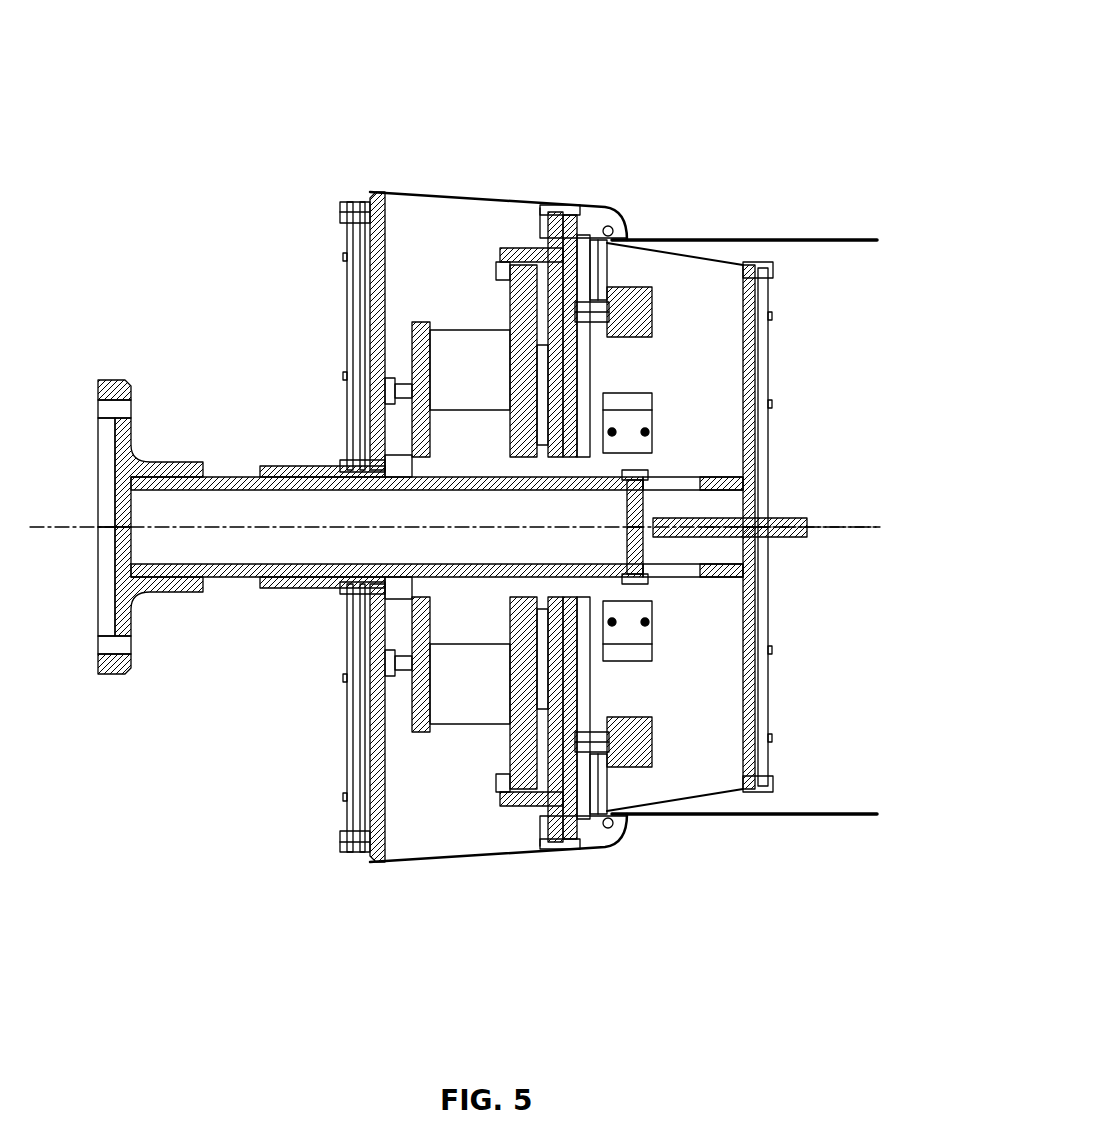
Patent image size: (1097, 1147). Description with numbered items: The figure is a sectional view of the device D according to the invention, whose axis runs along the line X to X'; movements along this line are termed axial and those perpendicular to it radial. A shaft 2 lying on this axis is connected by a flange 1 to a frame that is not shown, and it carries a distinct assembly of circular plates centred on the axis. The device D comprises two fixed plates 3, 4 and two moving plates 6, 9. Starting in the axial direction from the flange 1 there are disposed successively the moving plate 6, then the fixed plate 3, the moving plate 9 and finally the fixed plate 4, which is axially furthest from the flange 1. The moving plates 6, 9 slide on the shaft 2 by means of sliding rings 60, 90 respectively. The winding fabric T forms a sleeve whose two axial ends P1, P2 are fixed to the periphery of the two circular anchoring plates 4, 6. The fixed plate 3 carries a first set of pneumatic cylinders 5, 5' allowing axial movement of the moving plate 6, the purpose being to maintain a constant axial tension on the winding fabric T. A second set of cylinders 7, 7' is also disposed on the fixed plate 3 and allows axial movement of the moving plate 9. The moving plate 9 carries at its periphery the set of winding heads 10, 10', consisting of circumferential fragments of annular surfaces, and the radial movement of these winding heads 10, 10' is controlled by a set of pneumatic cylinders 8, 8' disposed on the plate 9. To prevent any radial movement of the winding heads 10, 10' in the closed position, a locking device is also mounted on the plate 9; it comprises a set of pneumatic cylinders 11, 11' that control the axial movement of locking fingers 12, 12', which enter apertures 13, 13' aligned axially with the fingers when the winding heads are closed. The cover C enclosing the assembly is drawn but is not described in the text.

The device D is at (310, 58).
The flange 1 is at (100, 668).
The shaft 2 is at (229, 581).
The fixed plate 3 is at (415, 725).
The fixed plate 4 is at (770, 735).
The pneumatic cylinder 5 is at (338, 663).
The pneumatic cylinder 5' is at (338, 355).
The moving plate 6 is at (375, 782).
The cylinder 7 is at (418, 799).
The cylinder 7' is at (435, 264).
The pneumatic cylinder 8 is at (495, 778).
The pneumatic cylinder 8' is at (502, 274).
The moving plate 9 is at (548, 232).
The winding head 10 is at (600, 794).
The winding head 10' is at (594, 264).
The pneumatic cylinder 11 is at (636, 807).
The pneumatic cylinder 11' is at (638, 187).
The locking finger 12 is at (590, 851).
The locking finger 12' is at (619, 152).
The aperture 13 is at (559, 935).
The aperture 13' is at (558, 112).
The sliding ring 60 is at (325, 462).
The sliding ring 90 is at (653, 430).
The axial end P1 is at (362, 197).
The axial end P2 is at (760, 268).
The winding fabric T is at (705, 240).
The cover C is at (735, 818).
The axis X is at (455, 518).
The axis X' is at (790, 518).